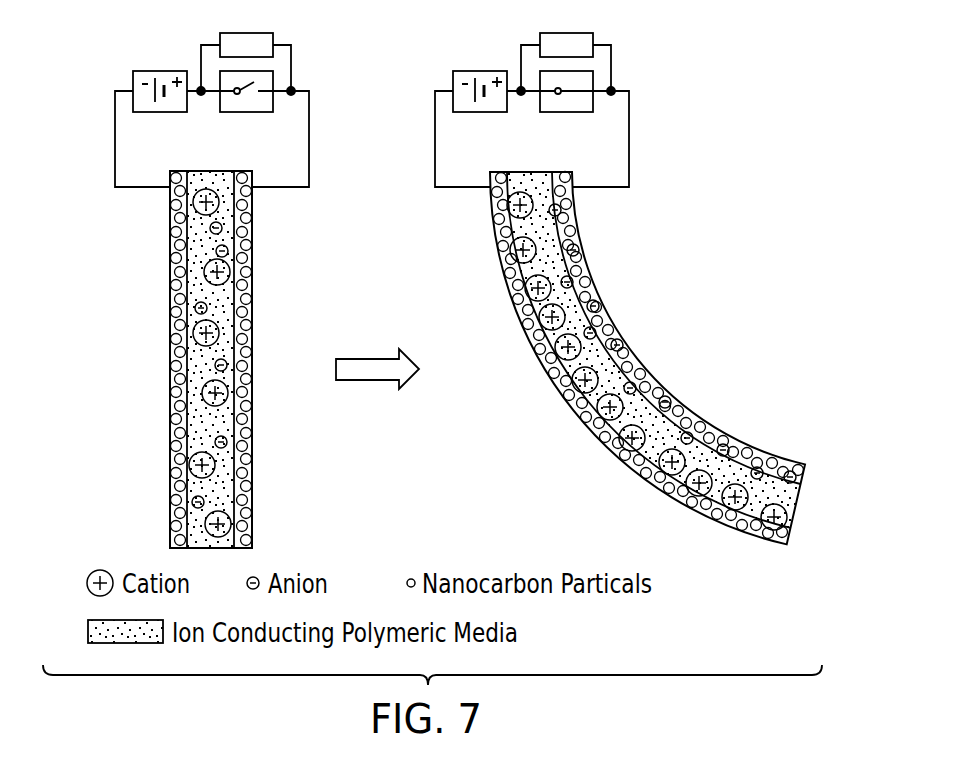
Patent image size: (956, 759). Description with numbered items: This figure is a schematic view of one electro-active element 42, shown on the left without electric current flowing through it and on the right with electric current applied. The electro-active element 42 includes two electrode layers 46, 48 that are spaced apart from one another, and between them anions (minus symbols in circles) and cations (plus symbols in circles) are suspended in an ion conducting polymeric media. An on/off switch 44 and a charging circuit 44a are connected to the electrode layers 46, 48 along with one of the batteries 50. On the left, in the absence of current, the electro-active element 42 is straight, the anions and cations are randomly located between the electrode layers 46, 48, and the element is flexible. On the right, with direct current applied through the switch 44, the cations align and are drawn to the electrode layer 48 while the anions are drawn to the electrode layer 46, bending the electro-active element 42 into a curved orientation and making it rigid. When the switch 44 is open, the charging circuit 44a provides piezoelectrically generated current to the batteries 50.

The electro-active element 42 is at (283, 252).
The on/off switch 44 is at (245, 113).
The charging circuit 44a is at (235, 33).
The electrode layer 46 is at (170, 375).
The electrode layer 48 is at (252, 328).
The battery 50 is at (158, 70).